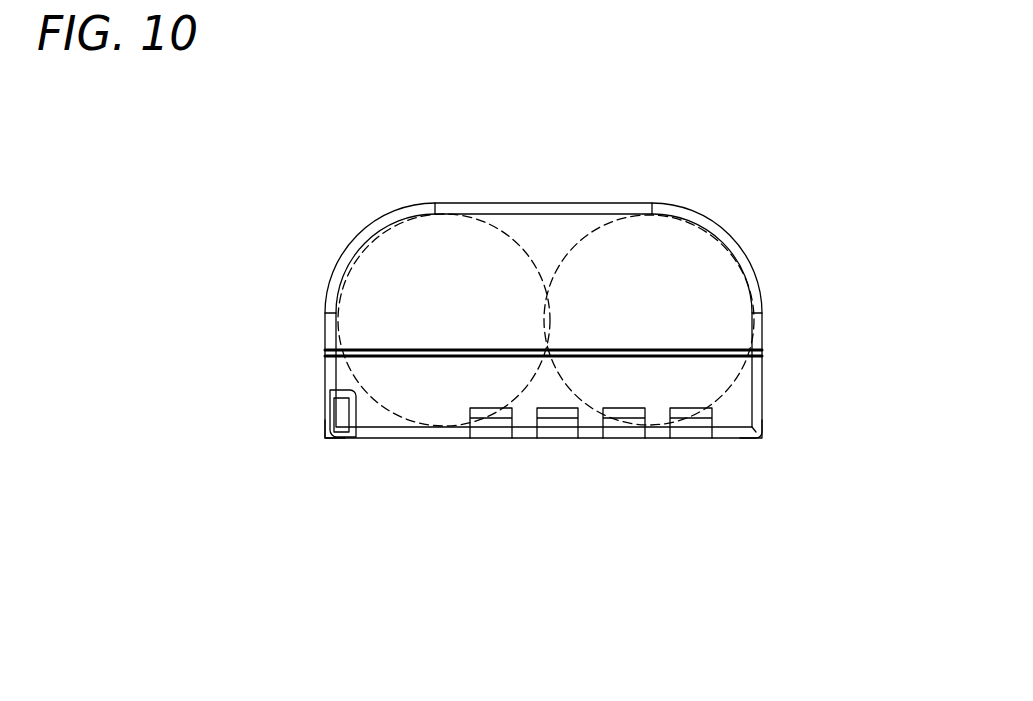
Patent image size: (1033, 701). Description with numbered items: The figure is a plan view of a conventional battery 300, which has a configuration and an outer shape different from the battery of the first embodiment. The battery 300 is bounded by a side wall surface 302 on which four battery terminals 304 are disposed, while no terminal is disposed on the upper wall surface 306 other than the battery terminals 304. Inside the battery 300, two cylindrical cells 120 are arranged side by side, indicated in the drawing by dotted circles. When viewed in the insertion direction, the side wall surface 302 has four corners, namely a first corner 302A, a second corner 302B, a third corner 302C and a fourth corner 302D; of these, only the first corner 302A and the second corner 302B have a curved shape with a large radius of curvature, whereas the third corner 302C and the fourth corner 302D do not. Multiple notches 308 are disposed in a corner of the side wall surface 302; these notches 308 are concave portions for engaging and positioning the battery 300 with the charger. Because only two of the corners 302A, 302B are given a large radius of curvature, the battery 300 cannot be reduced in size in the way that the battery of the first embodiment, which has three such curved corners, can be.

The battery 300 is at (830, 263).
The side wall surface 302 is at (477, 202).
The first corner 302A is at (335, 210).
The second corner 302B is at (740, 240).
The third corner 302C is at (325, 440).
The fourth corner 302D is at (760, 440).
The battery terminals 304 is at (690, 427).
The upper wall surface 306 is at (552, 250).
The notches 308 is at (343, 413).
The cylindrical cells 120 is at (373, 208).